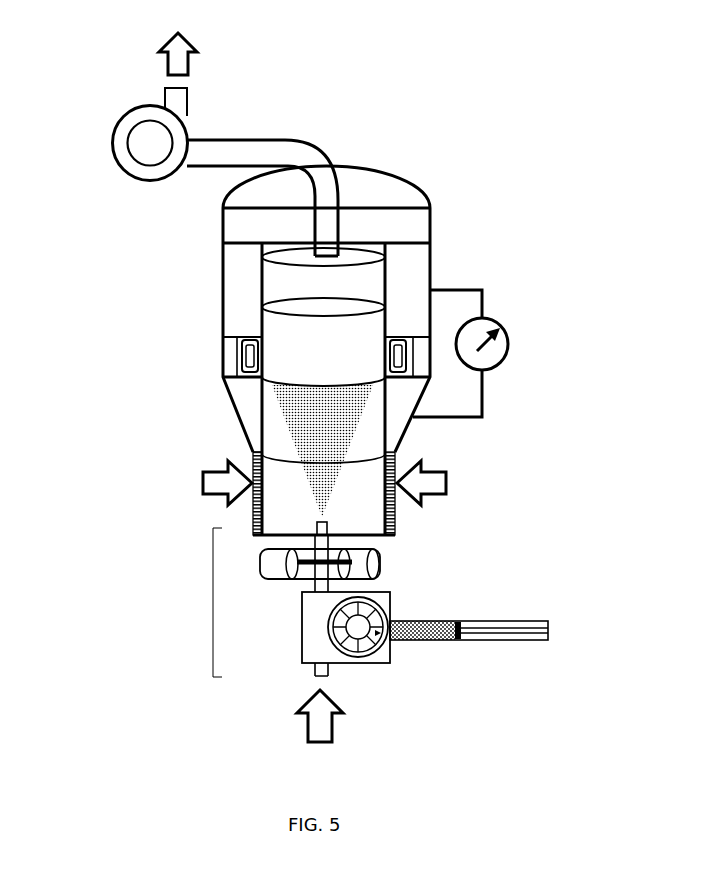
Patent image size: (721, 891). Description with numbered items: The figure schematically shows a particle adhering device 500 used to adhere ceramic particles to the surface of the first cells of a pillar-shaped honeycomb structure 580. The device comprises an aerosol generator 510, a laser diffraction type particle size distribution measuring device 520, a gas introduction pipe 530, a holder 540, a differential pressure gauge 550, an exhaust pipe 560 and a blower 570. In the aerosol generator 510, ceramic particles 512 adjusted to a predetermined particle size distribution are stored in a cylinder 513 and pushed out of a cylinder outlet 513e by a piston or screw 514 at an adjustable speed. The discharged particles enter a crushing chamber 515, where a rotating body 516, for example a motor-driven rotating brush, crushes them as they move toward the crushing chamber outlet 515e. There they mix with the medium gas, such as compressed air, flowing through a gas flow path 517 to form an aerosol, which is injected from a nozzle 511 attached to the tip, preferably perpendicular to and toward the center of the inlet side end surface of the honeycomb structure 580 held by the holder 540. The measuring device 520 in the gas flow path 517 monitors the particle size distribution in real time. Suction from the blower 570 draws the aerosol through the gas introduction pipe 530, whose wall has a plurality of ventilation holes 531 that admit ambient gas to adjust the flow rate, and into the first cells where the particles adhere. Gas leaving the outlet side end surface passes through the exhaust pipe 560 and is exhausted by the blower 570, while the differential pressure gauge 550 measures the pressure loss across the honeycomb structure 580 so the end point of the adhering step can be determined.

The particle adhering device 500 is at (381, 128).
The aerosol generator 510 is at (213, 603).
The nozzle 511 is at (330, 524).
The ceramic particles 512 is at (437, 641).
The cylinder 513 is at (527, 641).
The cylinder outlet 513e is at (390, 622).
The piston or screw 514 is at (515, 622).
The crushing chamber 515 is at (366, 658).
The crushing chamber outlet 515e is at (330, 626).
The rotating body 516 is at (330, 618).
The gas flow path 517 is at (312, 655).
The laser diffraction type particle size distribution measuring device 520 is at (382, 565).
The gas introduction pipe 530 is at (245, 517).
The ventilation holes 531 is at (254, 455).
The holder 540 is at (224, 260).
The differential pressure gauge 550 is at (510, 347).
The exhaust pipe 560 is at (266, 140).
The blower 570 is at (148, 107).
The pillar-shaped honeycomb structure 580 is at (262, 324).